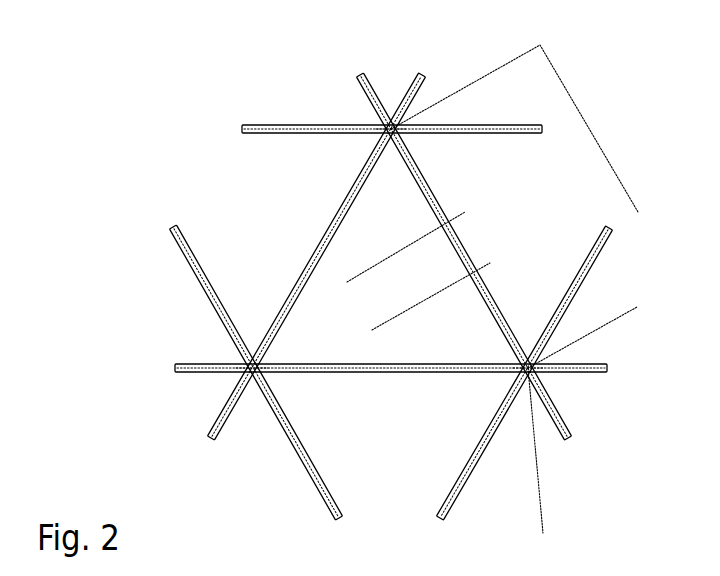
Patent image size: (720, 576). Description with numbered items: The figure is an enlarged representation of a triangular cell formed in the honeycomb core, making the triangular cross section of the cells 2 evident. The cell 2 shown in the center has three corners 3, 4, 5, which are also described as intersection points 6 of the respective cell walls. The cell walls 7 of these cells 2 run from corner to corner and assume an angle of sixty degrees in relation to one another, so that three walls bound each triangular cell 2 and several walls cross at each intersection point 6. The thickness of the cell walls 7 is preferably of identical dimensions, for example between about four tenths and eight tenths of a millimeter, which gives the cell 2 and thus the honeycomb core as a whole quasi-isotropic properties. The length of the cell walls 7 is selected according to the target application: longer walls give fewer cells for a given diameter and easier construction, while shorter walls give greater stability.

The cell 2 is at (273, 256).
The corner 3 is at (392, 127).
The corner 4 is at (536, 371).
The corner 5 is at (252, 378).
The intersection point 6 is at (468, 250).
The cell wall 7 is at (348, 195).